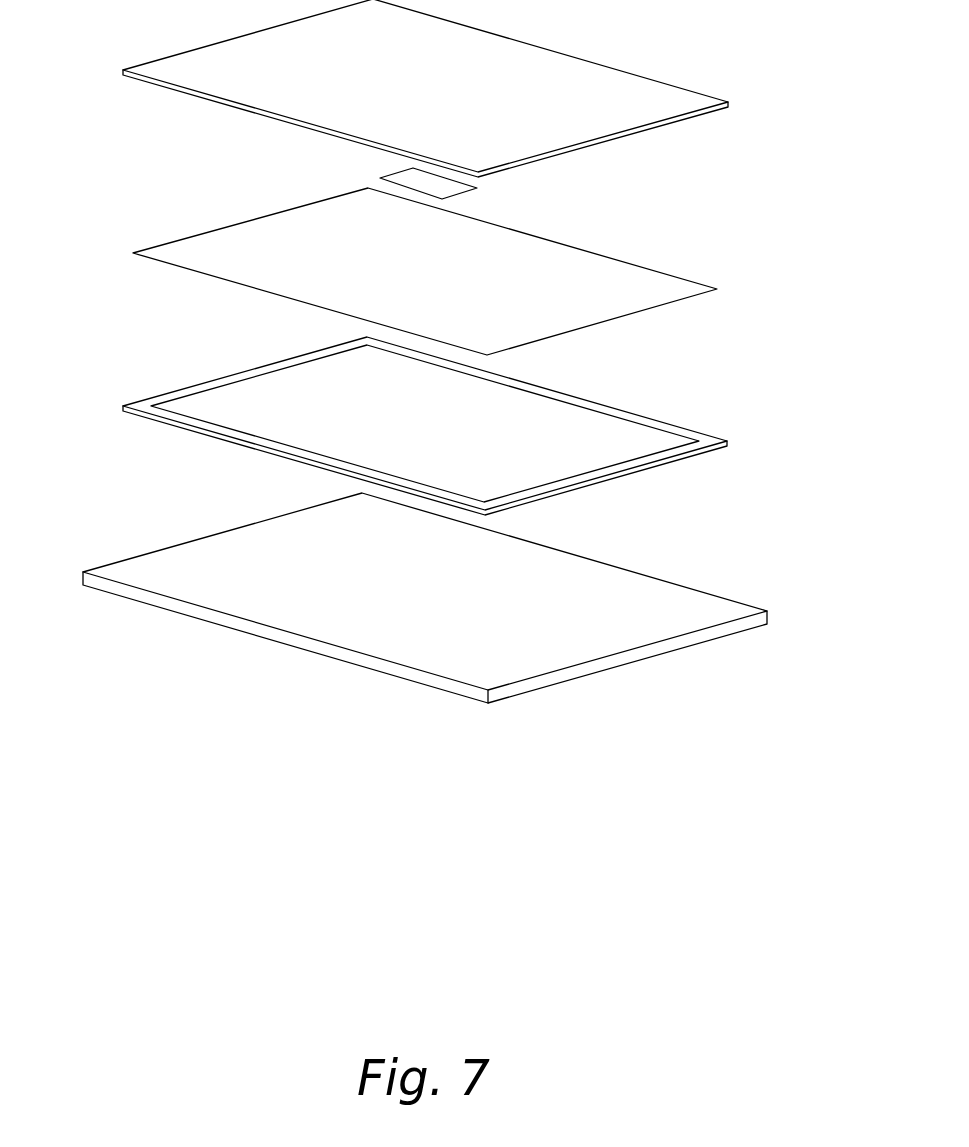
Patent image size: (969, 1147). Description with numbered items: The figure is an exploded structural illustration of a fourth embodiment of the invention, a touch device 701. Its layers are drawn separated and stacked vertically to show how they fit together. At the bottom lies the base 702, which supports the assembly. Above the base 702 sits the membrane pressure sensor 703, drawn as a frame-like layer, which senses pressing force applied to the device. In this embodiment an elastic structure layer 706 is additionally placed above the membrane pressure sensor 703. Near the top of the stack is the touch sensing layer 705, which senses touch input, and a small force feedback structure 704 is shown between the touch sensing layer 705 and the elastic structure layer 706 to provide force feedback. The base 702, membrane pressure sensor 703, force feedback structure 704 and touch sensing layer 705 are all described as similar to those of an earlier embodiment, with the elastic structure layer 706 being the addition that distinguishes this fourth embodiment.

The touch device 701 is at (140, 178).
The base 702 is at (746, 608).
The membrane pressure sensor 703 is at (713, 440).
The force feedback structure 704 is at (443, 190).
The touch sensing layer 705 is at (708, 101).
The elastic structure layer 706 is at (701, 287).